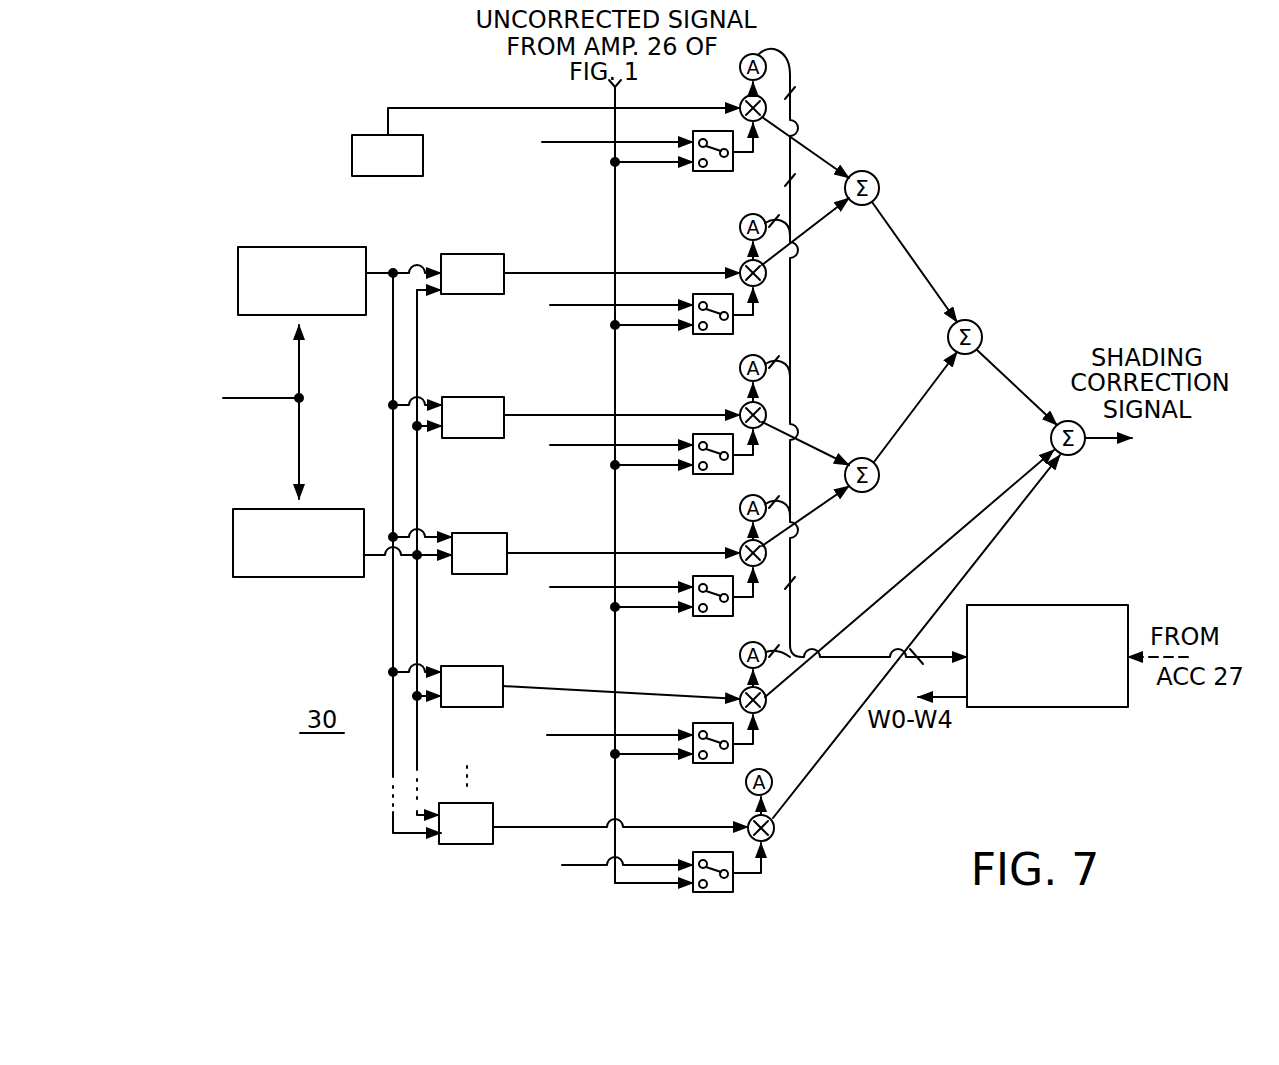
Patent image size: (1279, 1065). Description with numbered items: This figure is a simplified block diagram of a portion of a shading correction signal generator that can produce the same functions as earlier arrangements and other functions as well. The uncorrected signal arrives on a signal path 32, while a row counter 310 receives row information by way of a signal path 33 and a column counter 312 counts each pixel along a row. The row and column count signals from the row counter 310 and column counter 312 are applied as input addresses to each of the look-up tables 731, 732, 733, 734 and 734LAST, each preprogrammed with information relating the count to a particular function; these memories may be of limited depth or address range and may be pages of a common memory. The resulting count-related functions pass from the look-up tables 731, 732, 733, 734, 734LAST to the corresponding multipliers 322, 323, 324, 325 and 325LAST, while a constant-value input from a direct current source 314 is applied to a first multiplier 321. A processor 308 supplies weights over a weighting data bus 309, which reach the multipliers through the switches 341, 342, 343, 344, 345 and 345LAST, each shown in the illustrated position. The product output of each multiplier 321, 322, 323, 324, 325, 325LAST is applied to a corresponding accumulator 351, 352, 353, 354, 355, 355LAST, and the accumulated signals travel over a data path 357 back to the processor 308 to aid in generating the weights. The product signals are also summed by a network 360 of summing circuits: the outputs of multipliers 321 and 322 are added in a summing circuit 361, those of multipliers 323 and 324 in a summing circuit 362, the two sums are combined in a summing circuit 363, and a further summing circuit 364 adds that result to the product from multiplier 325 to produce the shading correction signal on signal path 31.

The signal path 31 is at (1100, 438).
The signal path 32 is at (623, 99).
The signal path 33 is at (250, 398).
The processor 308 is at (1068, 605).
The weighting data bus 309 is at (572, 148).
The row counter 310 is at (336, 247).
The column counter 312 is at (328, 509).
The direct current source 314 is at (352, 155).
The first multiplier 321 is at (742, 98).
The second multiplier 322 is at (742, 265).
The multiplier 323 is at (742, 407).
The multiplier 324 is at (740, 548).
The multiplier 325 is at (742, 690).
The last multiplier 325LAST is at (775, 826).
The single-pole double-throw switch 341 is at (710, 173).
The switch 342 is at (710, 336).
The switch 343 is at (710, 476).
The switch 344 is at (710, 618).
The switch 345 is at (710, 764).
The last switch 345LAST is at (735, 893).
The accumulator 351 is at (797, 68).
The accumulator 352 is at (740, 226).
The accumulator 353 is at (765, 360).
The accumulator 354 is at (740, 510).
The accumulator 355 is at (755, 642).
The last accumulator 355LAST is at (747, 786).
The data path 357 is at (848, 658).
The network of summing circuits 360 is at (940, 466).
The summing circuit 361 is at (880, 188).
The summing circuit 362 is at (863, 492).
The summing circuit 363 is at (948, 338).
The summing circuit 364 is at (1052, 430).
The look-up table 731 is at (470, 254).
The look-up table 732 is at (470, 397).
The look-up table 733 is at (470, 533).
The look-up table 734 is at (468, 666).
The last look-up table 734LAST is at (565, 845).